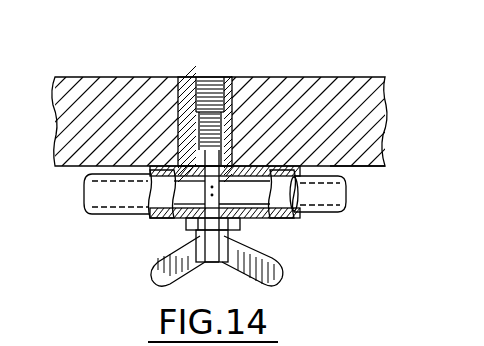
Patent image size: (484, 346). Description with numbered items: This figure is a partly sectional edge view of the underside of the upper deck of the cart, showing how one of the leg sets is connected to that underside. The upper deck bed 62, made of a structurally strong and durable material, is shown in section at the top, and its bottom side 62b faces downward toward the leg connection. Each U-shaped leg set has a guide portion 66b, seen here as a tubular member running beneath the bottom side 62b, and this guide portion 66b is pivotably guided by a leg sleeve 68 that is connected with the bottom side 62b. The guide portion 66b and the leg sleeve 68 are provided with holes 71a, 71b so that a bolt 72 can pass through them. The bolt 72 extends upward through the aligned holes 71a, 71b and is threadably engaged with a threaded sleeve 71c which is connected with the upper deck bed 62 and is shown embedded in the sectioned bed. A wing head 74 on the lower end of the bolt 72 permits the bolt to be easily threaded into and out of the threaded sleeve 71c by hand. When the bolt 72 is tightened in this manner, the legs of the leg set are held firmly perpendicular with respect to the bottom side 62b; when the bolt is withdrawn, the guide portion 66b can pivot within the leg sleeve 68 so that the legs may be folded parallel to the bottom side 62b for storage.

The upper deck bed 62 is at (343, 77).
The bottom side 62b is at (366, 168).
The guide portion 66b is at (347, 203).
The leg sleeve 68 is at (300, 220).
The hole 71a is at (202, 254).
The hole 71b is at (232, 229).
The threaded sleeve 71c is at (197, 104).
The bolt 72 is at (168, 222).
The wing head 74 is at (168, 270).